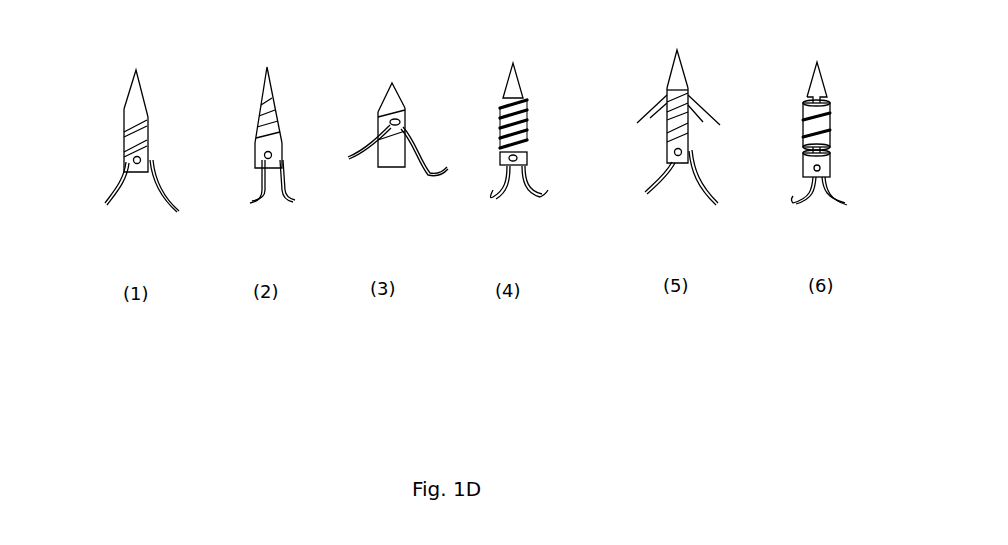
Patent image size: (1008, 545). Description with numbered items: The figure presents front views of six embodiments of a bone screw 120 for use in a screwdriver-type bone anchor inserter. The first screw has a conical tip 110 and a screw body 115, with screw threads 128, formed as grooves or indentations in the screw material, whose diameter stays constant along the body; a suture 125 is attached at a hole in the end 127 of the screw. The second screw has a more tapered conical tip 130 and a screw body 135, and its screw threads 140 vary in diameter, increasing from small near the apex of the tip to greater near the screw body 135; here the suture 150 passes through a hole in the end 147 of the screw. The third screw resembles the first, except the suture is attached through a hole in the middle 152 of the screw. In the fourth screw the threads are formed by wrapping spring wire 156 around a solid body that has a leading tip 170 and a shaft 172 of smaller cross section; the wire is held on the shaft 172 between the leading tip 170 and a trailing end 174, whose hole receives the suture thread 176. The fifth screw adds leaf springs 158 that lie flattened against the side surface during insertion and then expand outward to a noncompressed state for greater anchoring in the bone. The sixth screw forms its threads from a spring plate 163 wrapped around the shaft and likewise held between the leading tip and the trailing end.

The conical tip 110 is at (143, 72).
The bone screw 120 is at (117, 123).
The screw threads 128 is at (149, 122).
The end of the bone screw 127 is at (148, 155).
The screw body 115 is at (122, 163).
The suture 125 is at (123, 198).
The tapered conical tip 130 is at (268, 64).
The screw threads 140 is at (289, 100).
The screw body 135 is at (274, 135).
The end of the screw 147 is at (272, 155).
The suture 150 is at (295, 201).
The middle of the bone screw 152 is at (403, 109).
The leading tip 170 is at (517, 64).
The spring wire 156 is at (528, 101).
The shaft 172 is at (523, 148).
The trailing end 174 is at (501, 159).
The suture thread 176 is at (508, 203).
The leaf springs 158 is at (711, 102).
The spring plate 163 is at (834, 108).